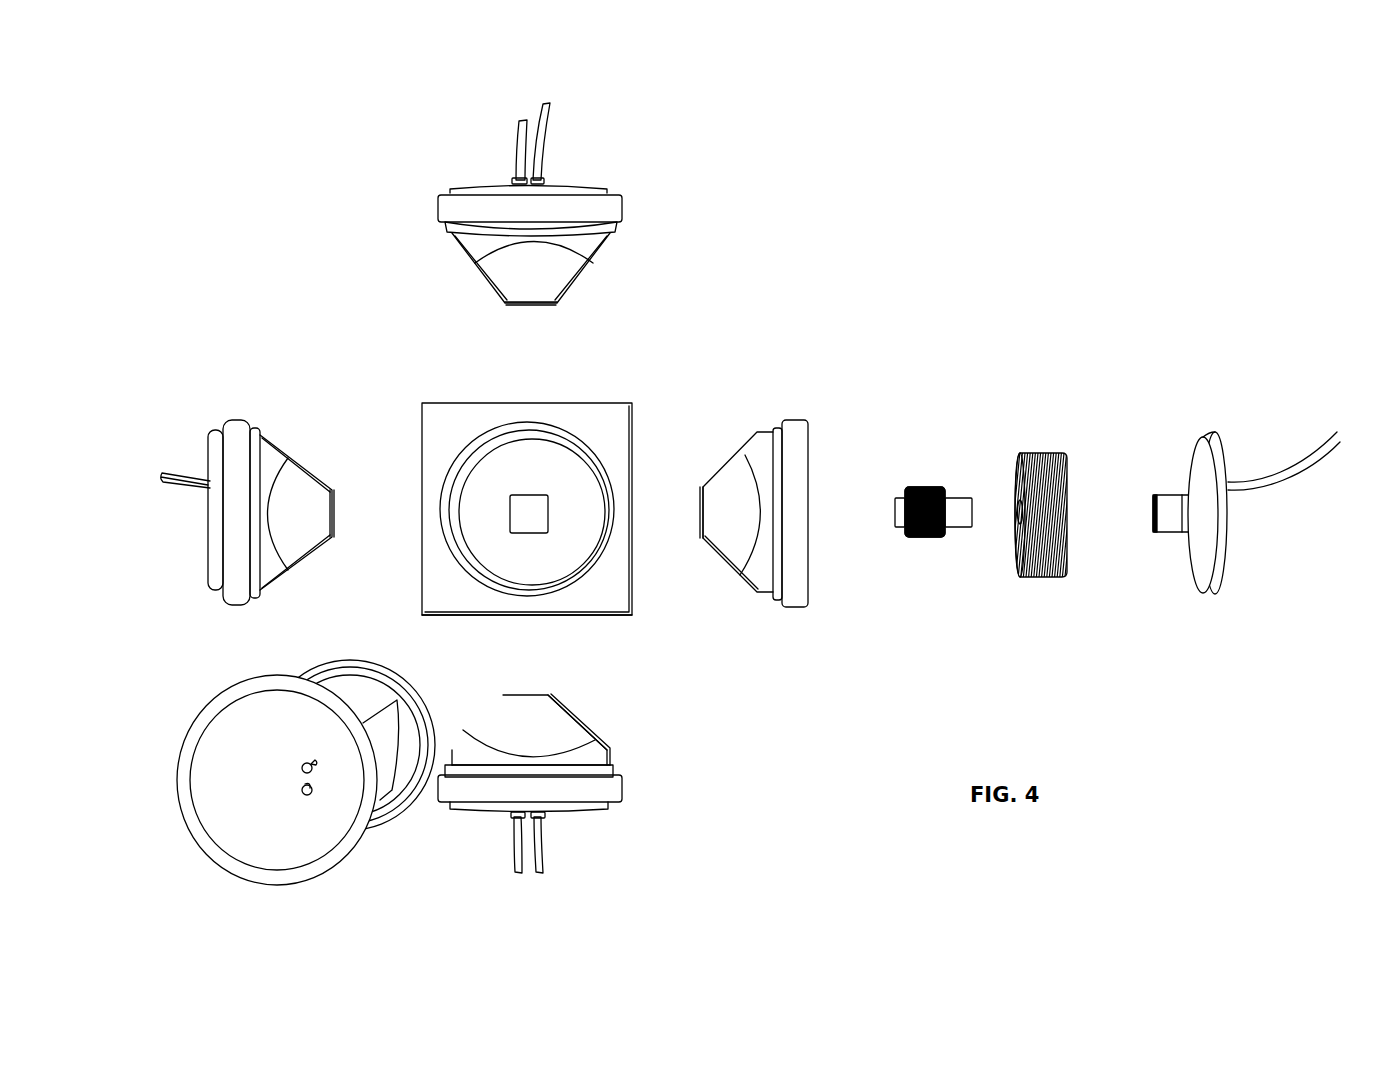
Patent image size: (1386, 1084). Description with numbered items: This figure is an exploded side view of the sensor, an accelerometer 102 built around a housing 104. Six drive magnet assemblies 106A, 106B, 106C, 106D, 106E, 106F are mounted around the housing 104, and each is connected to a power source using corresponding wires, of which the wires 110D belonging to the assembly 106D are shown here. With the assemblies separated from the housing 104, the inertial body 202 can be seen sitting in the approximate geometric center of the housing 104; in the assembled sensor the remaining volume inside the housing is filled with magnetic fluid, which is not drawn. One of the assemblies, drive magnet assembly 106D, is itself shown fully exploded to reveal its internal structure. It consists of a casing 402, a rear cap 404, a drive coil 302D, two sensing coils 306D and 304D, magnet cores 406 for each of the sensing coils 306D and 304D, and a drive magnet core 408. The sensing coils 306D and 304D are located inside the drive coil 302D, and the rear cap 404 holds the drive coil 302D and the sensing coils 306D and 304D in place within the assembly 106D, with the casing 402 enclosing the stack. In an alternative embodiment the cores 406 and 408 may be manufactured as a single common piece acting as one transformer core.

The accelerometer 102 is at (242, 192).
The housing 104 is at (597, 400).
The drive magnet assembly 106A is at (622, 208).
The drive magnet assembly 106B is at (238, 418).
The drive magnet assembly 106C is at (217, 780).
The drive magnet assembly 106D is at (1248, 612).
The drive magnet assembly 106E is at (622, 778).
The drive magnet assembly 106F is at (353, 662).
The inertial body 202 is at (513, 492).
The drive coil 302D is at (1037, 452).
The sensing coil 304D is at (920, 487).
The sensing coil 306D is at (925, 512).
The casing 402 is at (792, 418).
The rear cap 404 is at (1210, 430).
The magnet core 406 is at (960, 527).
The drive magnet core 408 is at (1157, 493).
The wires 110D is at (1292, 482).